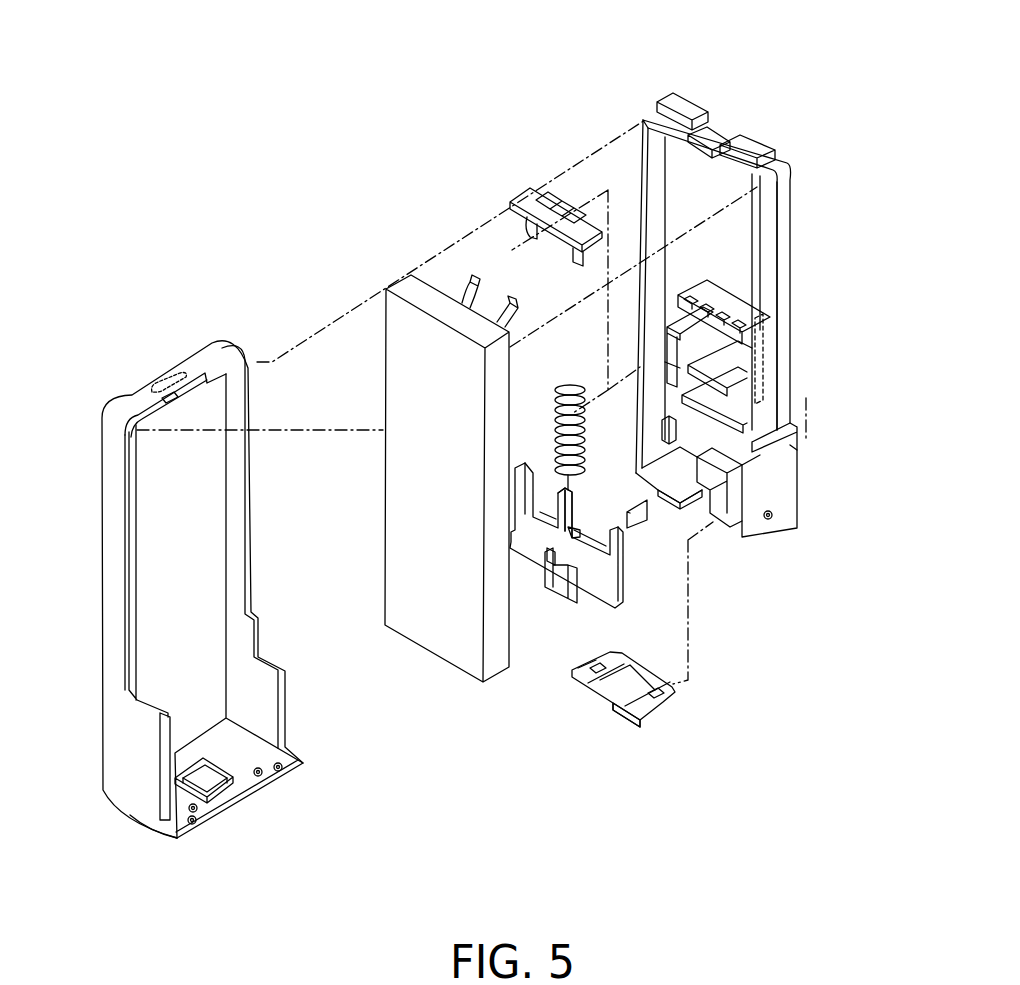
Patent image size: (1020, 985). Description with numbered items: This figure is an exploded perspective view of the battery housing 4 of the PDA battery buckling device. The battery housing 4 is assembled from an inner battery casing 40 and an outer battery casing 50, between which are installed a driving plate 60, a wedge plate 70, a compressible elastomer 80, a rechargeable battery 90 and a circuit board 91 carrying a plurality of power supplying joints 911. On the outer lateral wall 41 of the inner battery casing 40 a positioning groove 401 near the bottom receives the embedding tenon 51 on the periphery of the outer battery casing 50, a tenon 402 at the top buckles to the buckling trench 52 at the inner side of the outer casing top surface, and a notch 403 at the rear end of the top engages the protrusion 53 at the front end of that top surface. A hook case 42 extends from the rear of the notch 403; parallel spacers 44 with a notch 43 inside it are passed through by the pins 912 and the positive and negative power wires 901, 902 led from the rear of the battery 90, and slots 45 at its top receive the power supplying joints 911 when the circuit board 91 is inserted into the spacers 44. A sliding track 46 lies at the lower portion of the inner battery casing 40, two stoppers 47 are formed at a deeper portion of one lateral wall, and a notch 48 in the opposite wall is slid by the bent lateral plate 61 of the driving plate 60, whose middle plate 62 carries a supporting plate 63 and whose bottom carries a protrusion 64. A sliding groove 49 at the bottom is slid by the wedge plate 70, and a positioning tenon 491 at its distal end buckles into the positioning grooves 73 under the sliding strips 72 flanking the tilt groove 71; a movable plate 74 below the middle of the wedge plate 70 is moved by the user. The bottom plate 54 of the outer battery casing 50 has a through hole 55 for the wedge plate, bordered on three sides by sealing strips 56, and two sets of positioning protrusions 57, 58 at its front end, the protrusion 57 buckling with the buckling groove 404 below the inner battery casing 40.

The battery housing 4 is at (482, 118).
The inner battery casing 40 is at (796, 204).
The positioning groove 401 is at (660, 100).
The tenon 402 is at (705, 140).
The notch 403 is at (738, 140).
The buckling groove 404 is at (771, 520).
The outer lateral wall 41 is at (762, 268).
The hook case 42 is at (768, 345).
The notch 43 is at (675, 352).
The parallel spacer 44 is at (730, 418).
The slot 45 is at (748, 312).
The sliding track 46 is at (718, 527).
The stopper 47 is at (663, 436).
The notch 48 is at (775, 462).
The sliding groove 49 is at (740, 537).
The positioning tenon 491 is at (712, 492).
The outer battery casing 50 is at (100, 546).
The embedding tenon 51 is at (130, 670).
The buckling trench 52 is at (168, 378).
The protrusion 53 is at (162, 397).
The bottom plate 54 is at (168, 832).
The through hole 55 is at (212, 787).
The sealing strip 56 is at (235, 782).
The positioning protrusion 57 is at (262, 773).
The positioning protrusion 58 is at (282, 766).
The driving plate 60 is at (535, 548).
The lateral plate 61 is at (636, 523).
The middle plate 62 is at (576, 508).
The supporting plate 63 is at (580, 532).
The protrusion 64 is at (575, 603).
The wedge plate 70 is at (608, 692).
The tilt groove 71 is at (634, 677).
The sliding strip 72 is at (576, 672).
The positioning groove 73 is at (600, 663).
The movable plate 74 is at (627, 716).
The elastomer 80 is at (562, 388).
The battery 90 is at (388, 275).
The positive power wire 901 is at (466, 285).
The negative power wire 902 is at (514, 312).
The circuit board 91 is at (520, 200).
The power supplying joint 911 is at (556, 205).
The pin 912 is at (527, 226).